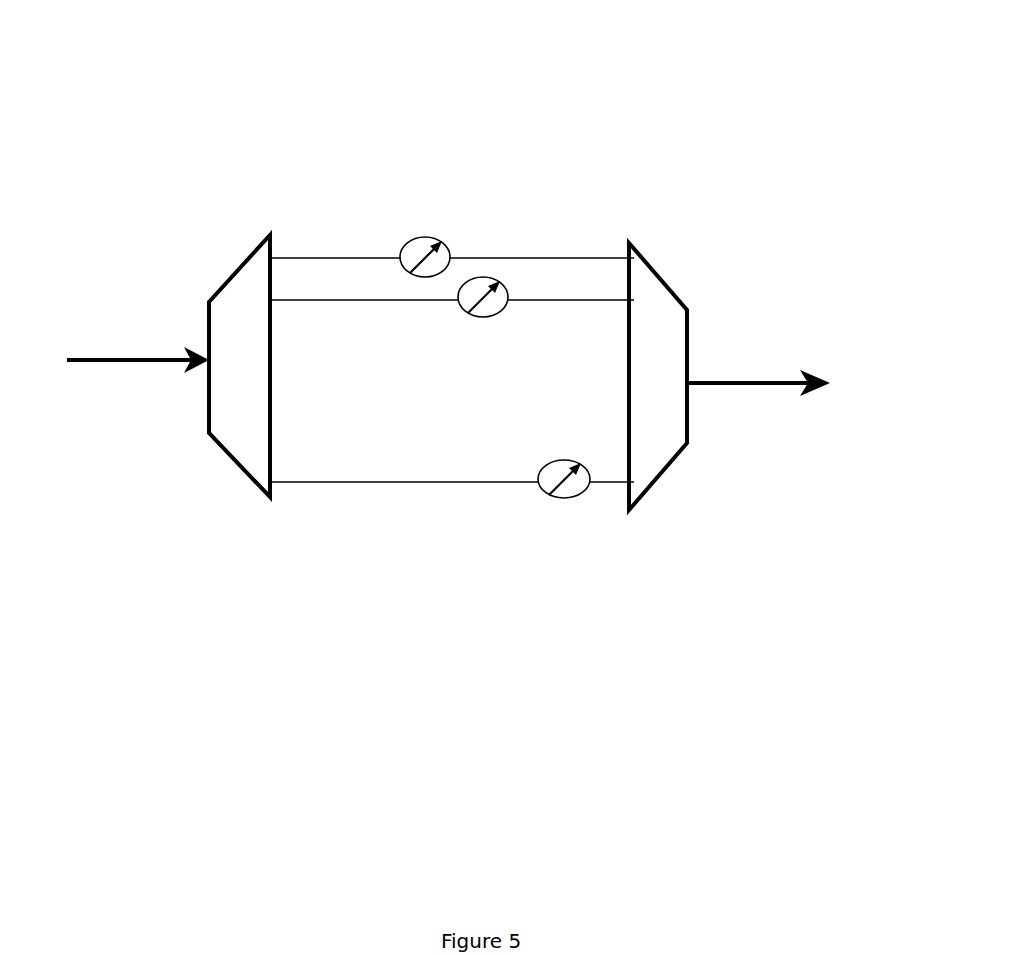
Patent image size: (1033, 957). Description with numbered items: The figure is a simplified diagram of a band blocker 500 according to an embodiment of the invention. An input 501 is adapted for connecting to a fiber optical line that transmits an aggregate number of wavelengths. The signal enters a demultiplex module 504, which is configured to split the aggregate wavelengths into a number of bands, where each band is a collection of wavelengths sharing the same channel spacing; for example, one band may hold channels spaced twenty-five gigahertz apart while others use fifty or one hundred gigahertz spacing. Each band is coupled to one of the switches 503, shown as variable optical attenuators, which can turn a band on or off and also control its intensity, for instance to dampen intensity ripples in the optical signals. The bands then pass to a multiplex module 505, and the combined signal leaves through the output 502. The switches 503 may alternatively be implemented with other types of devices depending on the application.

The optical band attenuation system 500 is at (451, 287).
The input 501 is at (115, 344).
The output 502 is at (768, 364).
The switches 503 is at (495, 351).
The demultiplex module 504 is at (283, 334).
The multiplex module 505 is at (691, 376).